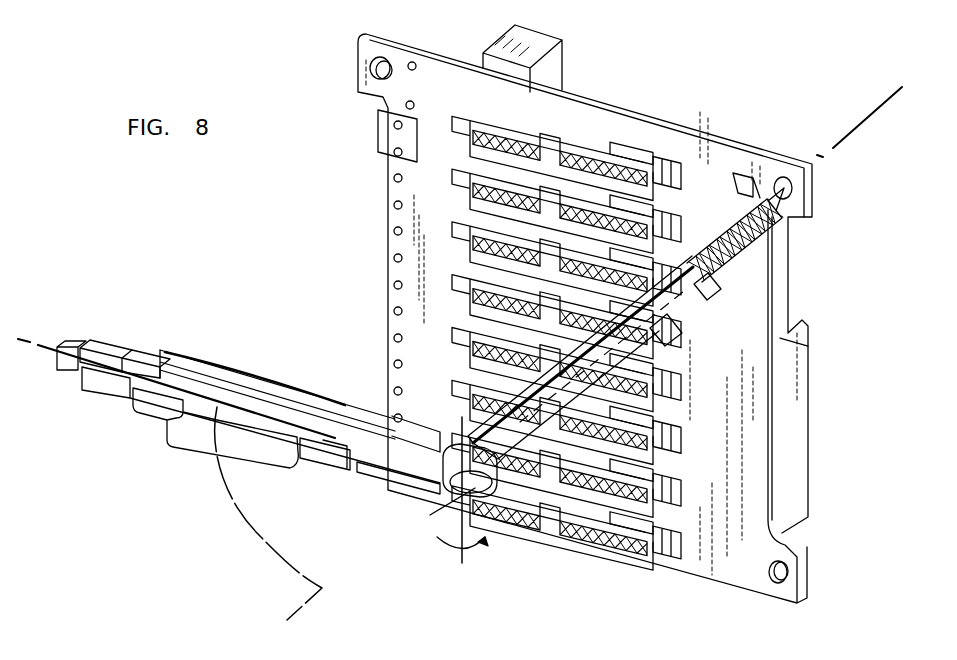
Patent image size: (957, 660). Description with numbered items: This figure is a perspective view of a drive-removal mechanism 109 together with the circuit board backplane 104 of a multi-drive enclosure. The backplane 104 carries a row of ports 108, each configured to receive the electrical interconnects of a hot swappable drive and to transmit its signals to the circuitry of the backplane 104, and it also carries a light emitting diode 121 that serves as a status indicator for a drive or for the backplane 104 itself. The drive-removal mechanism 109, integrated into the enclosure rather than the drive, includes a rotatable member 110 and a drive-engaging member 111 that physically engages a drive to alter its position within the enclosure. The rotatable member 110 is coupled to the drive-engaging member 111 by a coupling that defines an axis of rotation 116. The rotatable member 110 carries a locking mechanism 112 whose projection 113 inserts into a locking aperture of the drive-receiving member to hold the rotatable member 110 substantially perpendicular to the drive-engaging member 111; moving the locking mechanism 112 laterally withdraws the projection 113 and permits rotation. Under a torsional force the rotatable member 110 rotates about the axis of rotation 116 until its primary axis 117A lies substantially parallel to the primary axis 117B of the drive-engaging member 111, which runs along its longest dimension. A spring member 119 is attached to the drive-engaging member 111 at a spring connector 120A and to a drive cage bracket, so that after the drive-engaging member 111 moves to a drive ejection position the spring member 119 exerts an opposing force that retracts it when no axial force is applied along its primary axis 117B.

The circuit board backplane 104 is at (697, 165).
The port 108 is at (597, 148).
The drive-removal mechanism 109 is at (513, 537).
The rotatable member 110 is at (259, 356).
The drive-engaging member 111 is at (677, 320).
The locking mechanism 112 is at (200, 448).
The projection 113 is at (70, 348).
The axis of rotation 116 is at (467, 503).
The primary axis of the rotatable member 117A is at (43, 353).
The primary axis of the drive-engaging member 117B is at (860, 125).
The spring member 119 is at (765, 241).
The spring connector 120A is at (707, 293).
The light emitting diode 121 is at (380, 140).